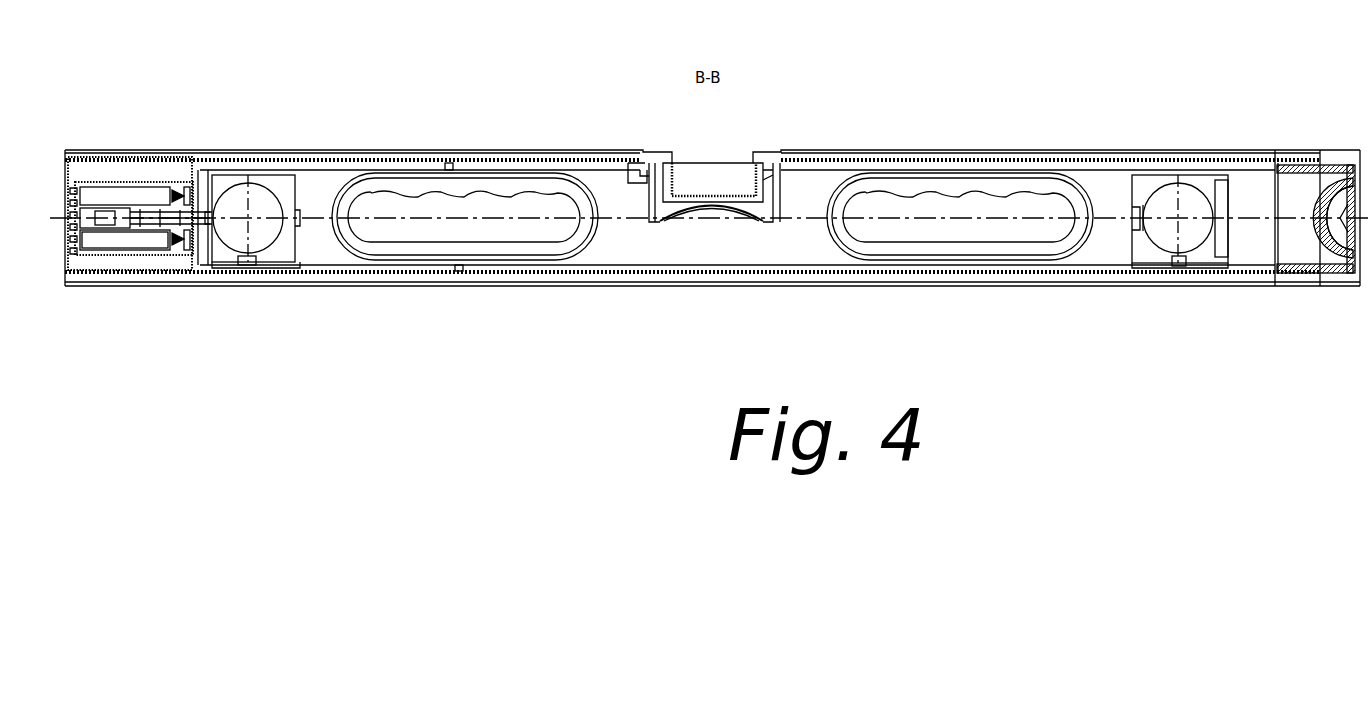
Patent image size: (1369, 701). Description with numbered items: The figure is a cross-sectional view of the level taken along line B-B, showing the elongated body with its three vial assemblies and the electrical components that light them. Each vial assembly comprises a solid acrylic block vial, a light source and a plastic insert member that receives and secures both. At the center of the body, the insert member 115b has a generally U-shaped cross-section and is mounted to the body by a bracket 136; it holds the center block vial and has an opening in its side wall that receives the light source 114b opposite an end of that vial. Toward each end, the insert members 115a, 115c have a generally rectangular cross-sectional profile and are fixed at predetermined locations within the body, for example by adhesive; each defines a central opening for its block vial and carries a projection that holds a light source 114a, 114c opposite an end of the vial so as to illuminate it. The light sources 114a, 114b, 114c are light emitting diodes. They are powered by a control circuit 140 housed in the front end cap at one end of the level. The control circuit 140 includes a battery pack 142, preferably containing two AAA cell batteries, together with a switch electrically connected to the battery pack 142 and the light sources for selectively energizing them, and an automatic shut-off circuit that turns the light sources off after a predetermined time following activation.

The control circuit 140 is at (120, 196).
The battery pack 142 is at (130, 238).
The insert member 115a is at (280, 185).
The light source 114a is at (250, 258).
The light source 114b is at (652, 165).
The insert member 115b is at (776, 178).
The bracket 136 is at (660, 222).
The insert member 115c is at (1147, 185).
The light source 114c is at (1180, 257).